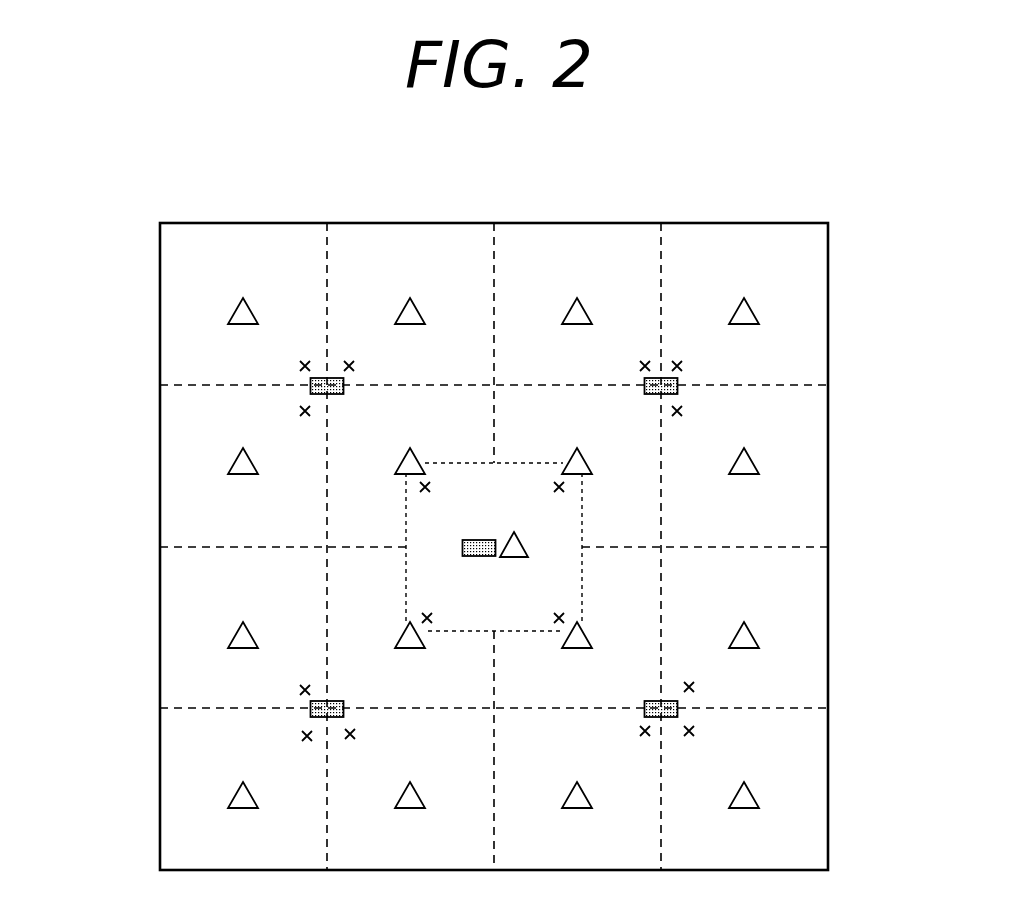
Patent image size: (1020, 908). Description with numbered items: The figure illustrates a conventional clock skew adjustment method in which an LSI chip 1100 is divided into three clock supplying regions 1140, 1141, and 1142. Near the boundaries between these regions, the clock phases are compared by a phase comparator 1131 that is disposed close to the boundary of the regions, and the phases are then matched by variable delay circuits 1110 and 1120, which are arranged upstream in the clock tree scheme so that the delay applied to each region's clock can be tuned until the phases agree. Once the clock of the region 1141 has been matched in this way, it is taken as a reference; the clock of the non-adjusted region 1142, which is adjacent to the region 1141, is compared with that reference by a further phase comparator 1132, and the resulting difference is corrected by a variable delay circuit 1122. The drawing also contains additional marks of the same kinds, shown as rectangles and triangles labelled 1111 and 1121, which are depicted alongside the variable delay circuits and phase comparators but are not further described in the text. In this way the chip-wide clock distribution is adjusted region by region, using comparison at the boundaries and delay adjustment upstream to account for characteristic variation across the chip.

The LSI chip 1100 is at (738, 224).
The variable delay circuit 1110 is at (463, 553).
The rectangular marks 1111 is at (677, 383).
The variable delay circuit 1120 is at (525, 540).
The unit cell corner triangle marks 1121 is at (585, 633).
The variable delay circuit 1122 is at (752, 305).
The phase comparator 1131 is at (417, 613).
The phase comparator 1132 is at (683, 412).
The clock supplying region 1140 is at (423, 530).
The clock supplying region 1141 is at (446, 418).
The clock supplying region 1142 is at (190, 268).